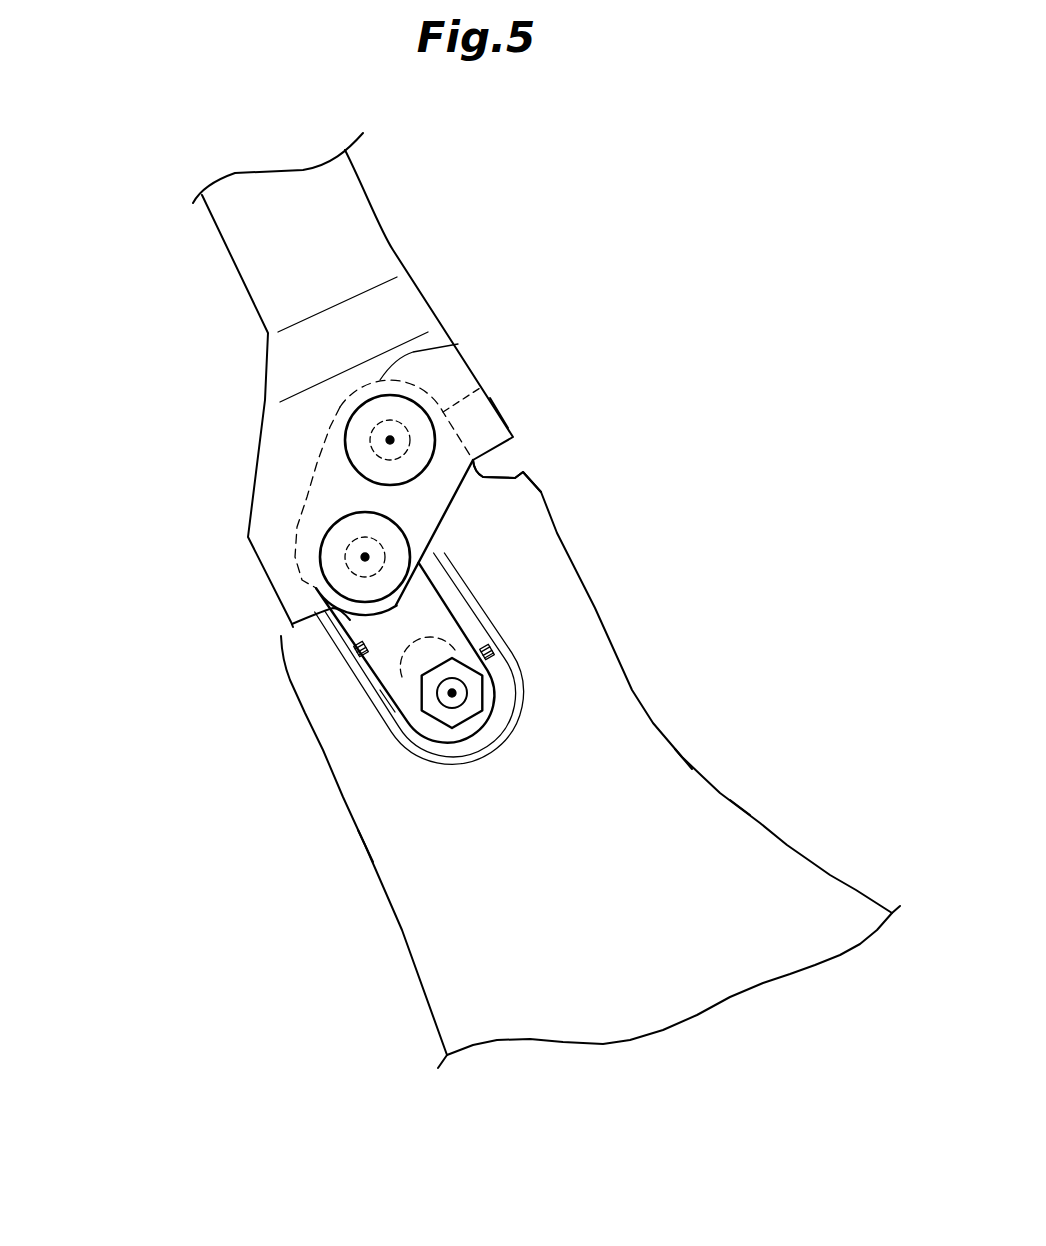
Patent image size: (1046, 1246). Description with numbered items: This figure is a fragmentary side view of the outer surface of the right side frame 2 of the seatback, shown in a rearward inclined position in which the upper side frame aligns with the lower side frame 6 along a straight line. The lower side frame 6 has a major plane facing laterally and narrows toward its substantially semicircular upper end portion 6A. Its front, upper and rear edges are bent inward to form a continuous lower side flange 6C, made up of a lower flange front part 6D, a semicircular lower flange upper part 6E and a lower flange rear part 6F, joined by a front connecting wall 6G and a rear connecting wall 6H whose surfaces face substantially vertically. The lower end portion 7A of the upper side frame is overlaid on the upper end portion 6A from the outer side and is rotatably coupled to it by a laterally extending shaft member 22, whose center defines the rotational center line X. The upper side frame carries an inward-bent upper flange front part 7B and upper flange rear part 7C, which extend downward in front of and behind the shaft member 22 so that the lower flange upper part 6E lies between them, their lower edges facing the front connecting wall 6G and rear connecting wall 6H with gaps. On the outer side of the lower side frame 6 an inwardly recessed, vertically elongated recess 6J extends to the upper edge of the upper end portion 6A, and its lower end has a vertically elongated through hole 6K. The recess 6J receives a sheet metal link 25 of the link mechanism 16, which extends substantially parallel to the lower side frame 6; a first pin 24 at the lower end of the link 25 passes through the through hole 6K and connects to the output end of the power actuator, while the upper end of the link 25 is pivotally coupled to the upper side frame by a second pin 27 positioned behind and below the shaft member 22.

The right side frame 2 is at (648, 206).
The lower side frame 6 is at (789, 854).
The upper end portion 6A is at (480, 388).
The lower side flange 6C is at (740, 806).
The lower flange front part 6D is at (685, 755).
The lower flange upper part 6E is at (458, 344).
The lower flange rear part 6F is at (364, 845).
The front connecting wall 6G is at (520, 470).
The rear connecting wall 6H is at (283, 632).
The recess 6J is at (393, 703).
The through hole 6K is at (447, 630).
The lower end portion 7A is at (448, 504).
The upper flange front part 7B is at (503, 417).
The upper flange rear part 7C is at (300, 576).
The link mechanism 16 is at (184, 494).
The shaft member 22 is at (387, 420).
The first pin 24 is at (468, 693).
The link 25 is at (362, 656).
The second pin 27 is at (333, 584).
The rotational center line X is at (387, 440).